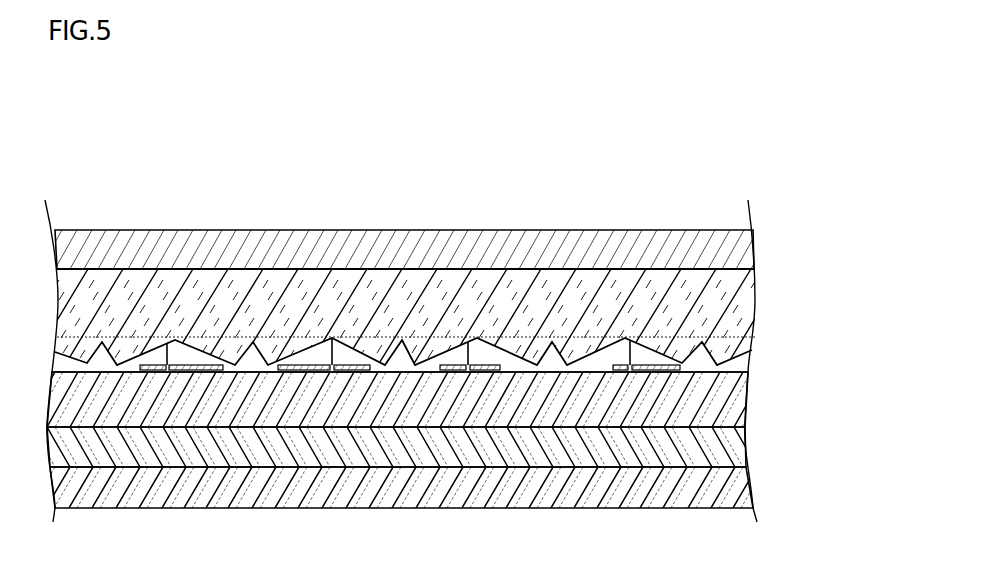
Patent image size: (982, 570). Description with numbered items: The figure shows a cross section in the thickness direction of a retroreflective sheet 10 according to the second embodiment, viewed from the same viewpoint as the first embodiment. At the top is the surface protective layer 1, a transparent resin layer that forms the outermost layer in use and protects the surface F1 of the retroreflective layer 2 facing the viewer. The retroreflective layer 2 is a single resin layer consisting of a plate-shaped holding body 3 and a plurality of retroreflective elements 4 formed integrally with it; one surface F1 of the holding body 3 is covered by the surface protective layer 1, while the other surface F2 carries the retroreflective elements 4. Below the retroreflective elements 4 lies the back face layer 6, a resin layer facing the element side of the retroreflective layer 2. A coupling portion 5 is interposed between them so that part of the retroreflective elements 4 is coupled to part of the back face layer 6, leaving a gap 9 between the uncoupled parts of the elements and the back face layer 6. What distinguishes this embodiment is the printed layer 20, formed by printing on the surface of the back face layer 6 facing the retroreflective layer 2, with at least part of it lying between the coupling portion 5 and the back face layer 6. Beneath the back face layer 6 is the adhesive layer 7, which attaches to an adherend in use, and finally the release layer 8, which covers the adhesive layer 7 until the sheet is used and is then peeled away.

The surface protective layer 1 is at (733, 242).
The retroreflective layer 2 is at (414, 319).
The holding body 3 is at (742, 310).
The retroreflective elements 4 is at (736, 348).
The coupling portion 5 is at (612, 360).
The back face layer 6 is at (728, 413).
The adhesive layer 7 is at (730, 452).
The release layer 8 is at (732, 487).
The gap 9 is at (403, 376).
The retroreflective sheet 10 is at (691, 167).
The printed layer 20 is at (398, 277).
The surface F1 is at (178, 269).
The surface F2 is at (275, 269).